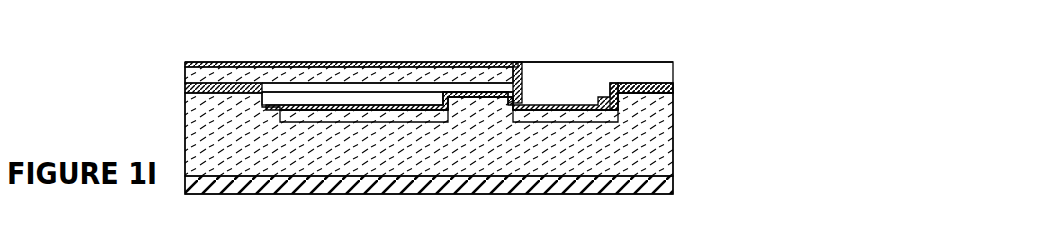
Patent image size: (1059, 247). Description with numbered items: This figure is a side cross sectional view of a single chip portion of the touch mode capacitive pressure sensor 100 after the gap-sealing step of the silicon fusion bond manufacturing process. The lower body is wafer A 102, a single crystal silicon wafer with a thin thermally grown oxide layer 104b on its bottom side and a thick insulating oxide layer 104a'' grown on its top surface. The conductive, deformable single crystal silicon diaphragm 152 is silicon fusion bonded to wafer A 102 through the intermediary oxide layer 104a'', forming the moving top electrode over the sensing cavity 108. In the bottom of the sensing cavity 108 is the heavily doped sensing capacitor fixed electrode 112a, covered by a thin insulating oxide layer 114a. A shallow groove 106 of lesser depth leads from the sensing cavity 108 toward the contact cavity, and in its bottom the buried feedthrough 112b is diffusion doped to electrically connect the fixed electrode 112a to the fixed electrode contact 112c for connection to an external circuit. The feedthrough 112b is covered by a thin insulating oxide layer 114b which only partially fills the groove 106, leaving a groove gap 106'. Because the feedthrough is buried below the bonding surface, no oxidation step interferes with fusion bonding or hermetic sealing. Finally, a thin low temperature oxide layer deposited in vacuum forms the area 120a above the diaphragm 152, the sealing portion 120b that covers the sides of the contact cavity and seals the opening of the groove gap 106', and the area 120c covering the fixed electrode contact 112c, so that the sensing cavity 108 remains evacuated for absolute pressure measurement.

The touch mode capacitive pressure sensor 100 is at (150, 105).
The wafer A 102 is at (688, 143).
The oxide layer 104a'' is at (476, 97).
The oxide layer 104b is at (674, 184).
The groove 106 is at (469, 155).
The groove gap 106' is at (460, 155).
The sensing cavity 108 is at (306, 97).
The sensing capacitor fixed electrode 112a is at (358, 123).
The buried feedthrough 112b is at (480, 108).
The fixed electrode contact 112c is at (575, 123).
The insulating oxide layer 114a is at (392, 103).
The insulating oxide layer 114b is at (490, 102).
The LTO layer area 120a is at (350, 62).
The LTO sealing portion 120b is at (523, 80).
The LTO layer area 120c is at (586, 103).
The diaphragm 152 is at (183, 78).